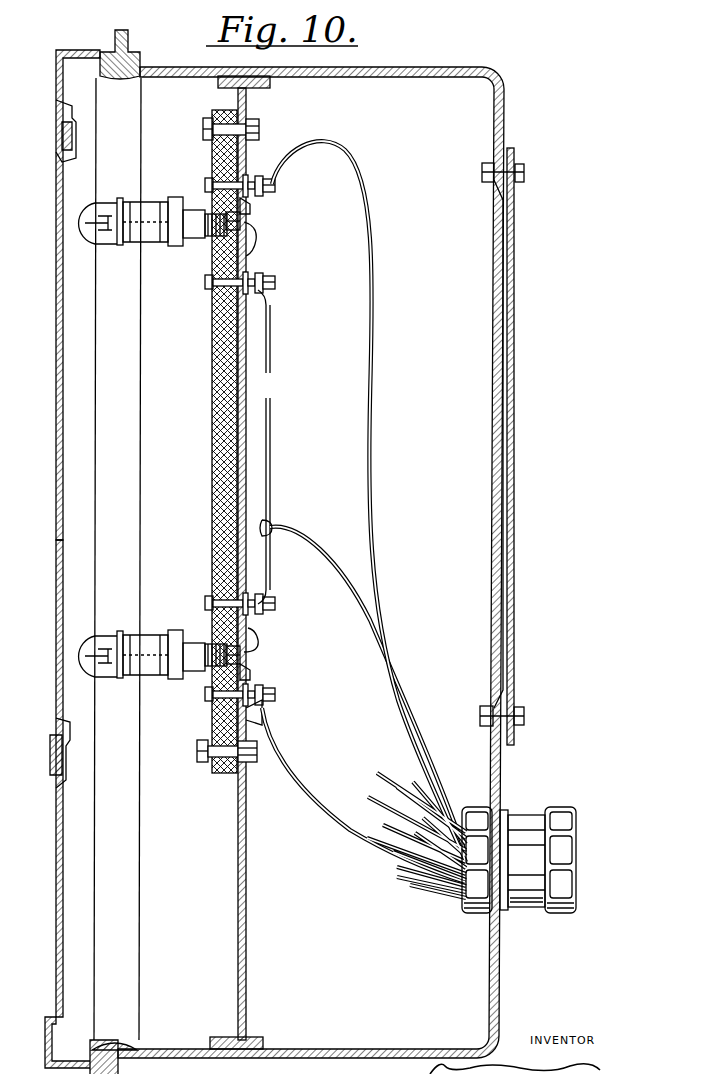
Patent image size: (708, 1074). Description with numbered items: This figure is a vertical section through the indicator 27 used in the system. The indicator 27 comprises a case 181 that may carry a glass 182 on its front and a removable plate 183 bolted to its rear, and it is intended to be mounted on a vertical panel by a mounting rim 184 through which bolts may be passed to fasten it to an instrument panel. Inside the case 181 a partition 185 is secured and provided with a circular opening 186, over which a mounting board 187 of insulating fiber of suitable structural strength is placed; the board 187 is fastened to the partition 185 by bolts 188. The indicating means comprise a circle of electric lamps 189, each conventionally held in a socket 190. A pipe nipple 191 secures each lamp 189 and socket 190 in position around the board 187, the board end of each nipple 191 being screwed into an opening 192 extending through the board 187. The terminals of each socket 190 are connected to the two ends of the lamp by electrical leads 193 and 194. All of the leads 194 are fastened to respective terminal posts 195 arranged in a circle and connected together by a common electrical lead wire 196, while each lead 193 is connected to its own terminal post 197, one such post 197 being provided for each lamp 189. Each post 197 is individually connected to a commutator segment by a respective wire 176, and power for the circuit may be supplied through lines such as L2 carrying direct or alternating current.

The indicator 27 is at (438, 67).
The mounting rim 184 is at (128, 40).
The glass 182 is at (56, 337).
The case 181 is at (56, 856).
The partition 185 is at (246, 823).
The mounting board 187 is at (212, 497).
The bolts 188 is at (215, 118).
The terminal post 197 is at (276, 188).
The terminal post 195 is at (276, 283).
The common electrical lead wire 196 is at (270, 431).
The opening 192 is at (248, 217).
The electrical lead 193 is at (250, 210).
The electrical lead 194 is at (256, 240).
The socket 190 is at (170, 198).
The pipe nipple 191 is at (205, 240).
The electric lamp 189 is at (78, 246).
The removable plate 183 is at (514, 370).
The circular opening 186 is at (250, 720).
The line L2 is at (374, 578).
The wires 176 is at (372, 400).